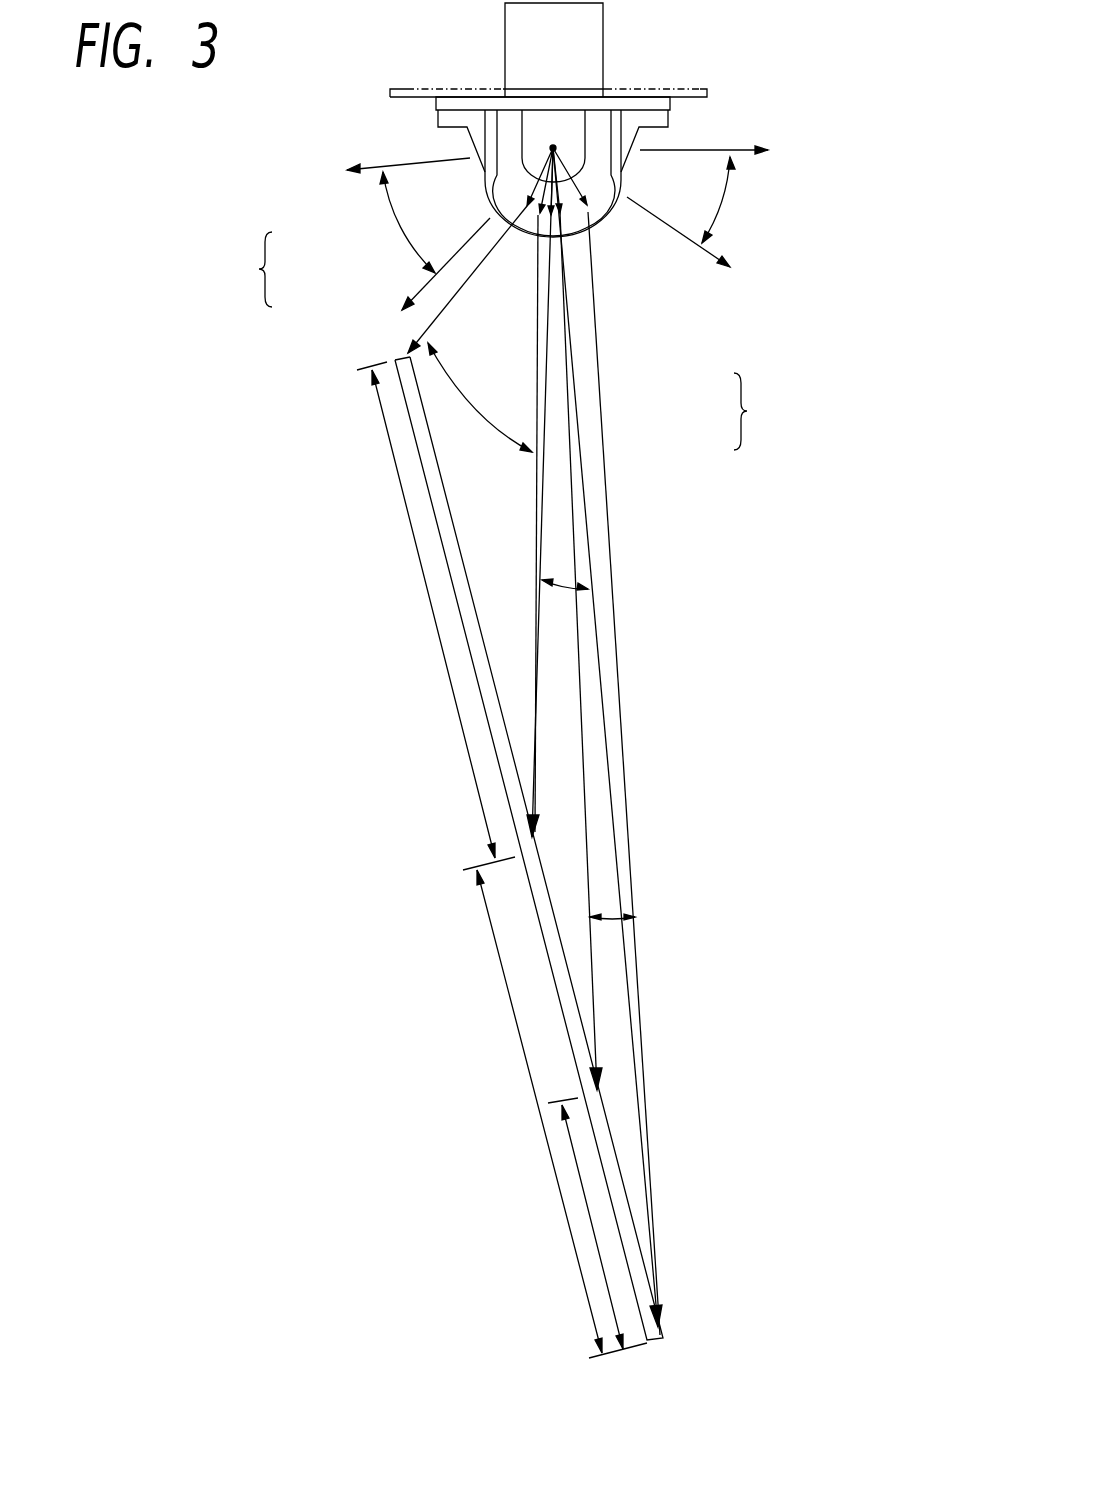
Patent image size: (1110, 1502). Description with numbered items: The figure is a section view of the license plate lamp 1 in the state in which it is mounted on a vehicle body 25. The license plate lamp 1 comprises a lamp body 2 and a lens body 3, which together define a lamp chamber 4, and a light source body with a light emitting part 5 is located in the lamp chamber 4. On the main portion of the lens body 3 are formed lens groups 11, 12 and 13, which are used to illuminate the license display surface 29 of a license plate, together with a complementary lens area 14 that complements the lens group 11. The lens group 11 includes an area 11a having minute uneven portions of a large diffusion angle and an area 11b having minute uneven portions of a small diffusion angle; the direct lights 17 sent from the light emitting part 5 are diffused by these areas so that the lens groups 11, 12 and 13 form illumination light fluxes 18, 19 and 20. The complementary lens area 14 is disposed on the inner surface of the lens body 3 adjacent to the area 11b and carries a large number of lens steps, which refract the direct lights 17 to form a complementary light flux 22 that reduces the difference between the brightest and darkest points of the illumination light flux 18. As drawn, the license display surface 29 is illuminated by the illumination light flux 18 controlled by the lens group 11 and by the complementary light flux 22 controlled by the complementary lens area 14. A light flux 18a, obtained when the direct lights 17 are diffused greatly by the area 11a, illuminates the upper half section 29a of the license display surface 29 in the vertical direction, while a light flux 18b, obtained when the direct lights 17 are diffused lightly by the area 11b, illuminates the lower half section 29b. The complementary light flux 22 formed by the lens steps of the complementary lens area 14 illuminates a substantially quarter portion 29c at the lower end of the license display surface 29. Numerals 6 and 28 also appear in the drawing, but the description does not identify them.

The license plate lamp 1 is at (800, 238).
The lamp body 2 is at (604, 58).
The lens body 3 is at (668, 120).
The lamp chamber 4 is at (508, 125).
The light emitting part 5 is at (555, 146).
The reflector cavity 6 is at (589, 133).
The lens group 11 is at (248, 269).
The area having minute uneven portions of a large diffusion angle 11a is at (520, 228).
The area having minute uneven portions of a small diffusion angle 11b is at (553, 262).
The lens group 12 is at (480, 183).
The lens group 13 is at (637, 172).
The complementary lens area 14 is at (583, 232).
The direct lights 17 is at (497, 140).
The illumination light flux 18 is at (758, 411).
The light flux 18a is at (480, 407).
The light flux 18b is at (567, 583).
The illumination light flux 19 is at (393, 202).
The illumination light flux 20 is at (723, 200).
The complementary light flux 22 is at (607, 907).
The vehicle body 25 is at (403, 88).
The light guide end 28 is at (405, 357).
The license display surface 29 is at (437, 463).
The upper half section 29a is at (408, 512).
The lower half section 29b is at (505, 990).
The substantially quarter portion 29c is at (588, 1197).